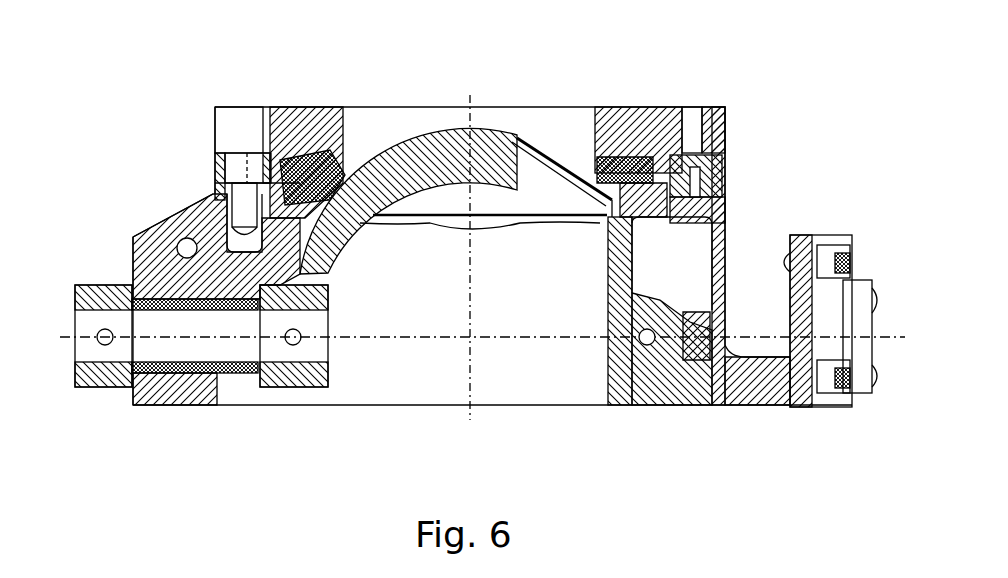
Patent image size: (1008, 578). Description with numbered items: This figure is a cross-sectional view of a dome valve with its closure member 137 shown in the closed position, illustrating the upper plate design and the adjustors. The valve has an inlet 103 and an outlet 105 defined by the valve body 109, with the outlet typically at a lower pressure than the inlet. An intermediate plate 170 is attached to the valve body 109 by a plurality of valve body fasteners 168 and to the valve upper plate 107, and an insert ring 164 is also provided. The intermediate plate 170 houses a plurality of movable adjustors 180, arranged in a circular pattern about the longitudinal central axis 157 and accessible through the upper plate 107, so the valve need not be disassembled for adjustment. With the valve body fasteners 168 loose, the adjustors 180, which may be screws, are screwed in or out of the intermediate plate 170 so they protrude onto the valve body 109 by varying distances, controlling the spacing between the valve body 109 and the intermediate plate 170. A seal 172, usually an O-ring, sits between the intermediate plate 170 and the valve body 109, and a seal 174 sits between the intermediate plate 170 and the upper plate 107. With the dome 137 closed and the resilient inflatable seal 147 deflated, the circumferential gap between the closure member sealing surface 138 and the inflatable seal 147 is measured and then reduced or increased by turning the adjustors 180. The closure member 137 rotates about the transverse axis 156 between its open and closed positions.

The inlet 103 is at (472, 130).
The outlet 105 is at (363, 404).
The valve upper plate 107 is at (725, 122).
The valve body 109 is at (134, 243).
The closure member 137 is at (410, 170).
The closure member sealing surface 138 is at (533, 142).
The resilient/inflatable seal 147 is at (615, 138).
The transverse axis 156 is at (165, 404).
The longitudinal central axis 157 is at (473, 363).
The insert ring 164 is at (679, 107).
The valve body fastener 168 is at (240, 152).
The intermediate plate 170 is at (213, 177).
The seal 172 is at (300, 150).
The seal 174 is at (300, 148).
The movable adjustor 180 is at (725, 170).